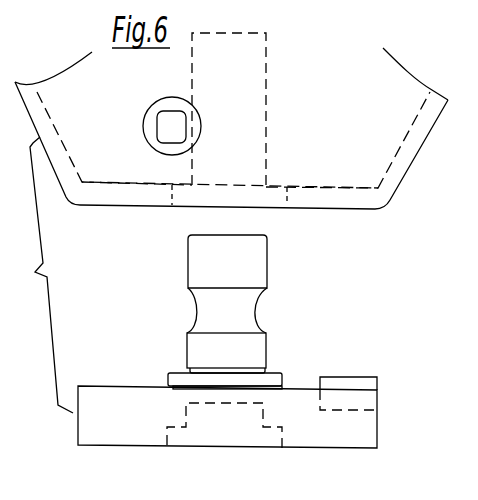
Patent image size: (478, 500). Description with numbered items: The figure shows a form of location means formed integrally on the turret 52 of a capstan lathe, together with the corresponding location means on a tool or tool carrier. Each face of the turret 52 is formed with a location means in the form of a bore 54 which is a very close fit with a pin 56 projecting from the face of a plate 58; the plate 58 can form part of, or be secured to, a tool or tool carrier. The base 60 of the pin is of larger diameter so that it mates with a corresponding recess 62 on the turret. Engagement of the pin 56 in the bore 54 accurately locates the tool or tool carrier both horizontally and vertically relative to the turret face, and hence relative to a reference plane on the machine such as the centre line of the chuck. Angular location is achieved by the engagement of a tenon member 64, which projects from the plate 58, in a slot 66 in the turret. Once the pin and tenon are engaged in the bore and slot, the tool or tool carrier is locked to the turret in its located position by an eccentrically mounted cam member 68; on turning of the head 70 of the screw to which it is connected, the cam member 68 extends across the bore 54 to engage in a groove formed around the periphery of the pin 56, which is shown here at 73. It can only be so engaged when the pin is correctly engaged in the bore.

The turret 52 is at (231, 128).
The bore 54 is at (229, 110).
The pin 56 is at (257, 257).
The plate 58 is at (132, 443).
The base of the pin 60 is at (255, 378).
The recess 62 is at (193, 198).
The tenon member 64 is at (332, 380).
The slot 66 is at (326, 200).
The cam member 68 is at (188, 101).
The head of the screw 70 is at (168, 128).
The neck 73 is at (255, 315).